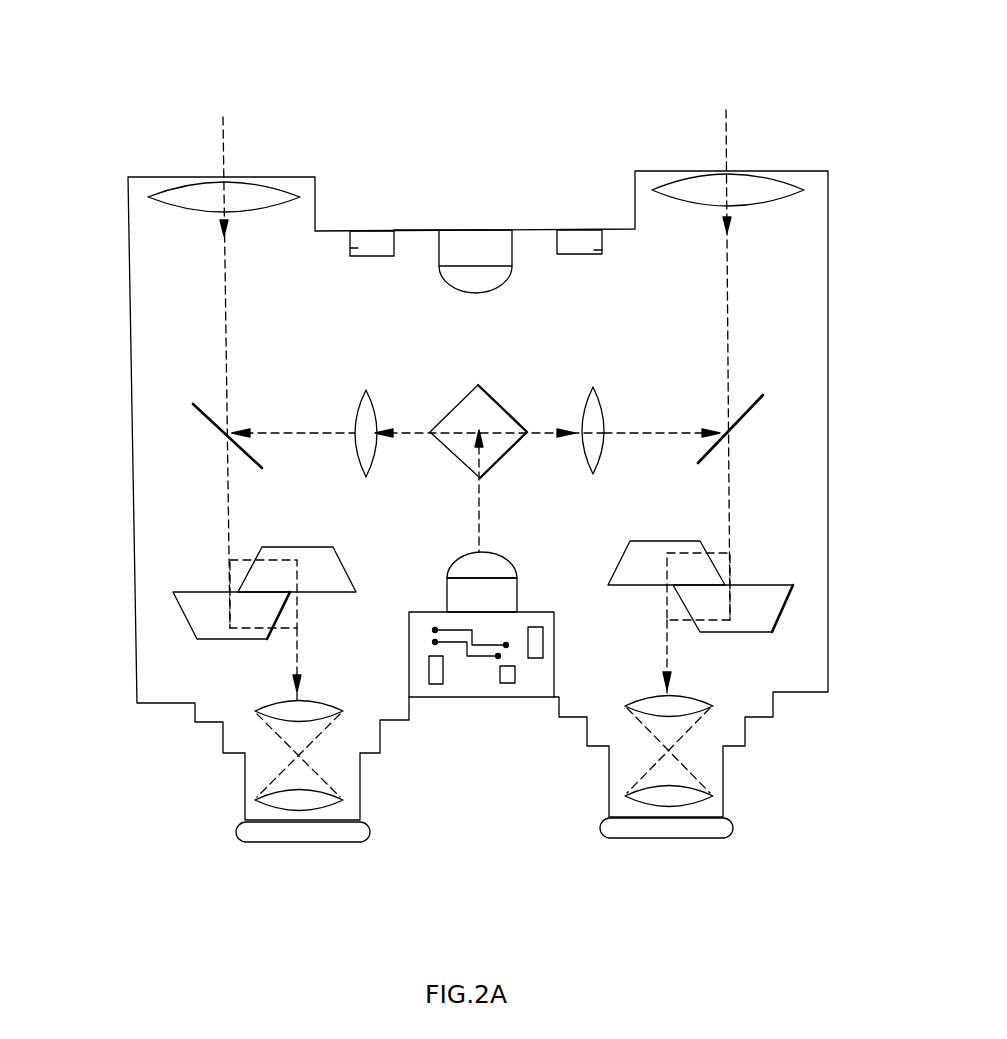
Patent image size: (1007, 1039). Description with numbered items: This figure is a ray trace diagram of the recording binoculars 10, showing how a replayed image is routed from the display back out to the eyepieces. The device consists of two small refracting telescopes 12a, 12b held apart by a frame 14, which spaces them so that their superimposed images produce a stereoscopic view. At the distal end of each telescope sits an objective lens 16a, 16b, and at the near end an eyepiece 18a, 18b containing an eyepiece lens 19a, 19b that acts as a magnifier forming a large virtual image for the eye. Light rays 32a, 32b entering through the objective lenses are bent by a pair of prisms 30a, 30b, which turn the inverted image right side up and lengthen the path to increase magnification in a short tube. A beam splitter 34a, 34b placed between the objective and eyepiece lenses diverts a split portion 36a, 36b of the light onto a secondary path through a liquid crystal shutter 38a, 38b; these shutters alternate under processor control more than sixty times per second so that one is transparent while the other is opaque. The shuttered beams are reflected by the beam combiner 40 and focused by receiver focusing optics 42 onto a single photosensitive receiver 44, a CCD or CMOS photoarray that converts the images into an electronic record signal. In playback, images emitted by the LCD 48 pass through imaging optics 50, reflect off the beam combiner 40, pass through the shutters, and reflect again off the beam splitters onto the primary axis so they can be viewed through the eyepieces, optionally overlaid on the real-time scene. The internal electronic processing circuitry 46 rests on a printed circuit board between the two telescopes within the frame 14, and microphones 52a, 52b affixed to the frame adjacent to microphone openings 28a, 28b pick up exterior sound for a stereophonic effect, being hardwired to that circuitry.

The binoculars 10 is at (848, 150).
The refracting telescope 12a is at (131, 405).
The refracting telescope 12b is at (828, 287).
The frame 14 is at (413, 230).
The objective lens 16a is at (244, 177).
The objective lens 16b is at (752, 171).
The eyepiece 18a is at (270, 842).
The eyepiece 18b is at (700, 838).
The eyepiece lens 19a is at (258, 805).
The eyepiece lens 19b is at (705, 797).
The microphone opening 28a is at (355, 231).
The microphone opening 28b is at (580, 230).
The pair of prisms 30a is at (325, 547).
The pair of prisms 30b is at (637, 541).
The light beam 32a is at (218, 128).
The light beam 32b is at (720, 130).
The beam splitter 34a is at (200, 405).
The beam splitter 34b is at (760, 397).
The split light portion 36a is at (320, 432).
The split light portion 36b is at (682, 432).
The liquid crystal shutter 38a is at (365, 392).
The liquid crystal shutter 38b is at (592, 390).
The beam combiner 40 is at (478, 385).
The receiver focusing optics 42 is at (500, 278).
The photosensitive receiver 44 is at (473, 232).
The internal electronic processing circuitry 46 is at (467, 693).
The LCD 48 is at (517, 600).
The imaging optics 50 is at (500, 556).
The microphone 52a is at (350, 254).
The microphone 52b is at (575, 256).